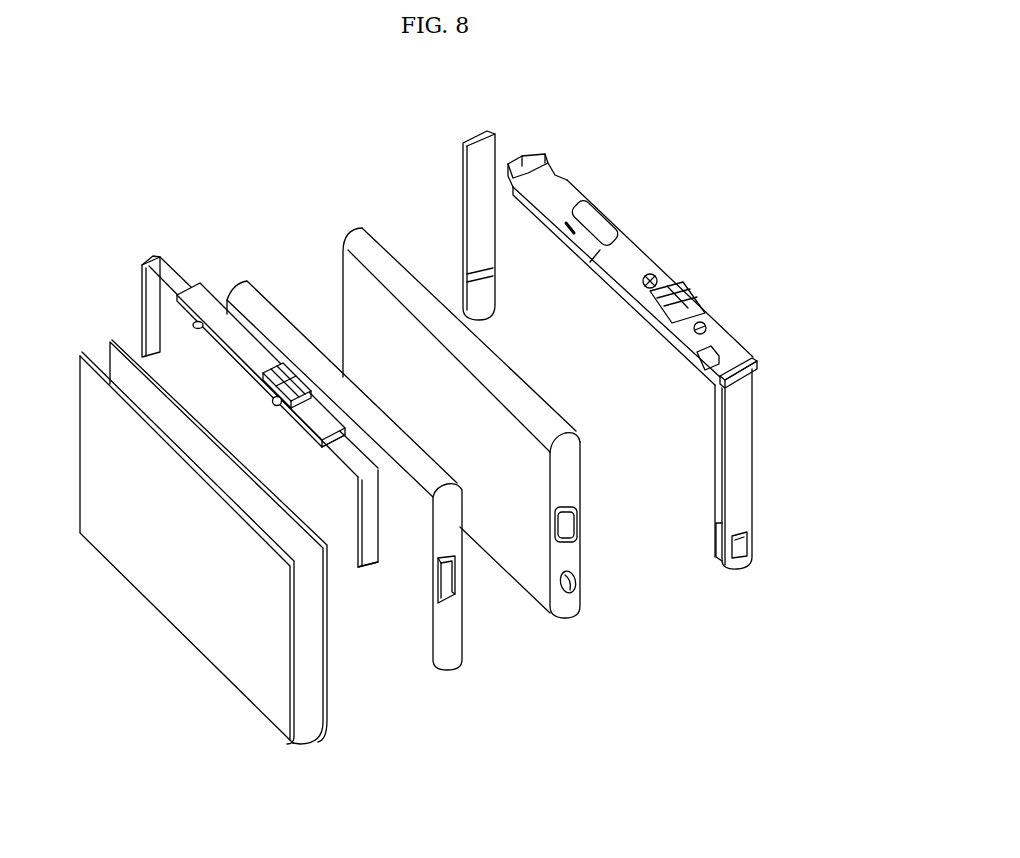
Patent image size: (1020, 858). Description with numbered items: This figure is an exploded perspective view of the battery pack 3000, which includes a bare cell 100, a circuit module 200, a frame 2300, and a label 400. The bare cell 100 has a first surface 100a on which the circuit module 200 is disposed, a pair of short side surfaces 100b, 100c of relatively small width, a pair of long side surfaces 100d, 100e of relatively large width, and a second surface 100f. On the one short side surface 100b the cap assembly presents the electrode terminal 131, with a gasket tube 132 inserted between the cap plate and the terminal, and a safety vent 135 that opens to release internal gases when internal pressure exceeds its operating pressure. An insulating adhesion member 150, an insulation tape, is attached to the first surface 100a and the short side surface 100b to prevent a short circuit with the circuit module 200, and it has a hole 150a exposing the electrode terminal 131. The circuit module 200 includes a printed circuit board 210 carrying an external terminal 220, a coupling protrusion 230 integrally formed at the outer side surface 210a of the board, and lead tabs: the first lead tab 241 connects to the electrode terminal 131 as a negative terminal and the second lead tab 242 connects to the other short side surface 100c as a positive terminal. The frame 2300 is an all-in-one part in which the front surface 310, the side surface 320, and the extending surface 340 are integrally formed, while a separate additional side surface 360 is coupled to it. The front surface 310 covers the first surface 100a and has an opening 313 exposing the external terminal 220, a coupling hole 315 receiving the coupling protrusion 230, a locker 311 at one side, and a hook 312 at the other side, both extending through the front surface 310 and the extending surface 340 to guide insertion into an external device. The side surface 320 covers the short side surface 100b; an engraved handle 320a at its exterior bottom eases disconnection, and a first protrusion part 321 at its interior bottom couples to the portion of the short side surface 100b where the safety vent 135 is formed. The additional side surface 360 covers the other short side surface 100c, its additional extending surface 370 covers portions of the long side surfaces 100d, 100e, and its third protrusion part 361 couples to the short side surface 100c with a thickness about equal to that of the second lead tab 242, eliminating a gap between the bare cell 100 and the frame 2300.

The battery pack 3000 is at (77, 134).
The label 400 is at (90, 337).
The first lead tab 241 is at (150, 258).
The second lead tab 242 is at (368, 558).
The circuit module 200 is at (261, 371).
The printed circuit board 210 is at (240, 345).
The outer side surface of printed circuit board 210a is at (318, 445).
The external terminal 220 is at (262, 394).
The coupling protrusion 230 is at (277, 406).
The insulating adhesion member 150 is at (344, 475).
The hole 150a is at (438, 588).
The bare cell 100 is at (451, 418).
The first surface 100a is at (498, 372).
The short side surface 100b is at (568, 617).
The short side surface 100c is at (342, 265).
The long side surface 100d is at (525, 405).
The long side surface 100e is at (560, 416).
The second surface 100f is at (490, 562).
The gasket tube 132 is at (577, 507).
The electrode terminal 131 is at (581, 523).
The safety vent 135 is at (582, 584).
The frame 2300 is at (607, 349).
The additional side surface 360 is at (480, 225).
The additional extending surface 370 is at (463, 212).
The third protrusion part 361 is at (497, 292).
The front surface 310 is at (656, 300).
The hook 312 is at (541, 170).
The opening 313 is at (672, 290).
The coupling hole 315 is at (690, 302).
The locker 311 is at (742, 343).
The extending surface 340 is at (593, 259).
The side surface 320 is at (747, 482).
The first protrusion part 321 is at (715, 548).
The handle 320a is at (748, 548).